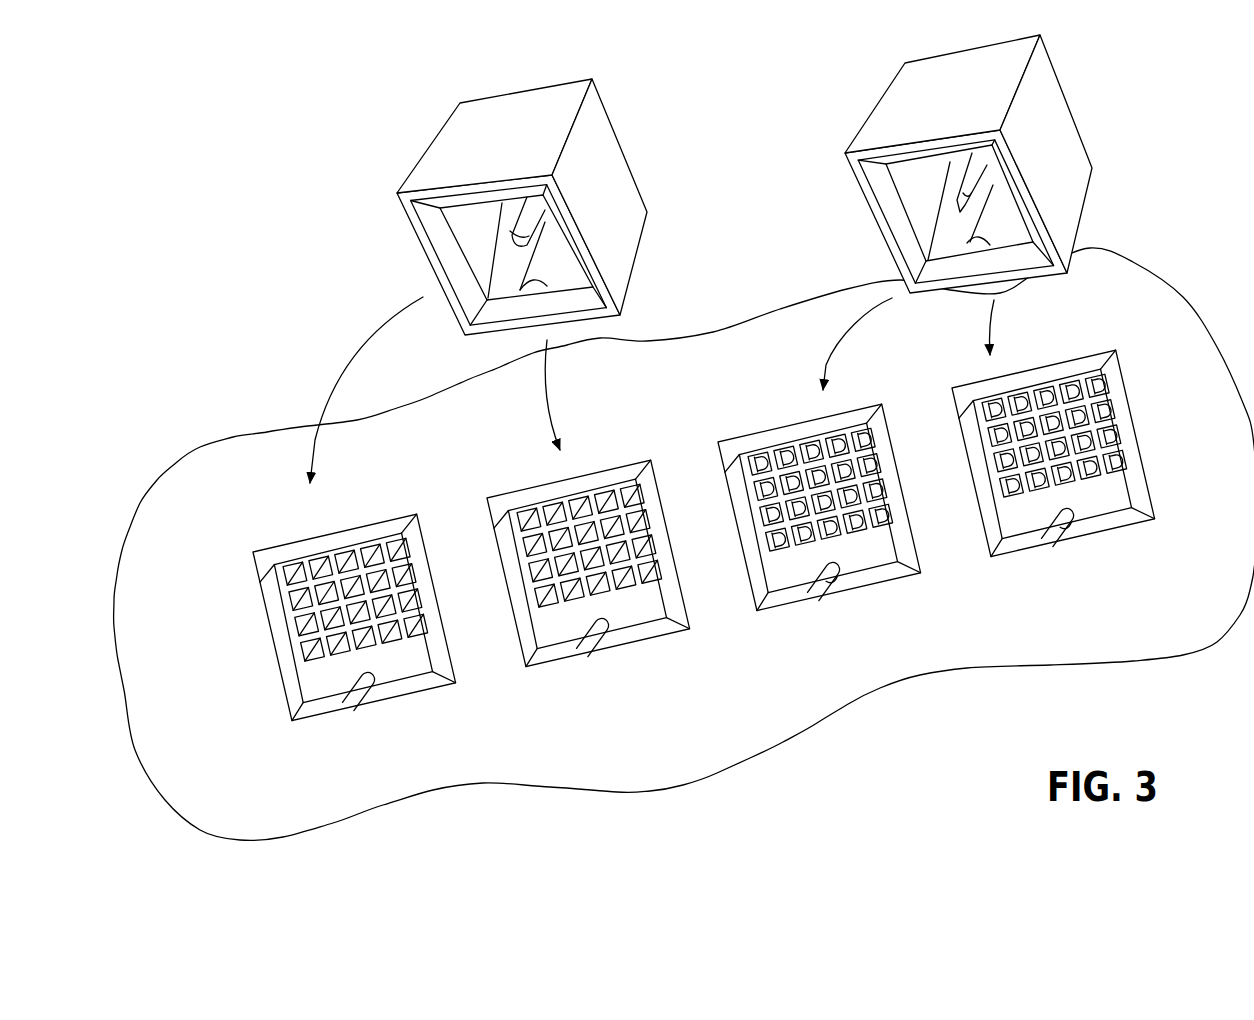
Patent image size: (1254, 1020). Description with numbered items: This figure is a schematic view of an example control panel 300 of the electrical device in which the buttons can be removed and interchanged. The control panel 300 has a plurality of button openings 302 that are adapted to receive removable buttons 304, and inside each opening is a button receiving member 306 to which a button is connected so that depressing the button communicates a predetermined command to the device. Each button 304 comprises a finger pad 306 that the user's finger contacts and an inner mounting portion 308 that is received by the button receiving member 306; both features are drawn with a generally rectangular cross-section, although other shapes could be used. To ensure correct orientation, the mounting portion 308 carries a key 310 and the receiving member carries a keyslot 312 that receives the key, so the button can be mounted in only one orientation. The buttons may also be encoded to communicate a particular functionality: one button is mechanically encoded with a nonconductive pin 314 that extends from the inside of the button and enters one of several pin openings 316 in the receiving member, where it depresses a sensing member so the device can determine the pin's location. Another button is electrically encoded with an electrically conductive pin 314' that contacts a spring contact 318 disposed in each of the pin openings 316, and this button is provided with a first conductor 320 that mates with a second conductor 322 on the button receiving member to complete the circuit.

The control panel 300 is at (187, 414).
The button openings 302 is at (703, 568).
The removable buttons 304 is at (769, 203).
The button receiving member 306 is at (647, 207).
The inner mounting portion 308 is at (452, 248).
The key 310 is at (547, 277).
The keyslot 312 is at (363, 700).
The nonconductive pin 314 is at (508, 195).
The electrically conductive pin 314' is at (949, 156).
The pin openings 316 is at (282, 603).
The spring contact 318 is at (885, 520).
The first conductor 320 is at (968, 247).
The second conductor 322 is at (832, 595).